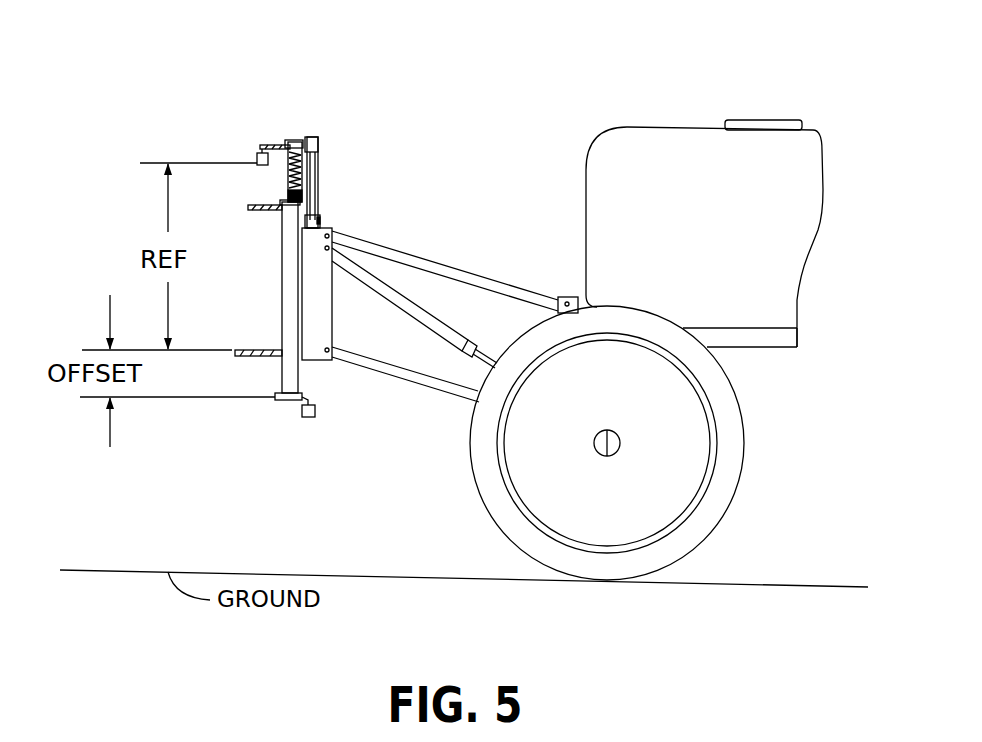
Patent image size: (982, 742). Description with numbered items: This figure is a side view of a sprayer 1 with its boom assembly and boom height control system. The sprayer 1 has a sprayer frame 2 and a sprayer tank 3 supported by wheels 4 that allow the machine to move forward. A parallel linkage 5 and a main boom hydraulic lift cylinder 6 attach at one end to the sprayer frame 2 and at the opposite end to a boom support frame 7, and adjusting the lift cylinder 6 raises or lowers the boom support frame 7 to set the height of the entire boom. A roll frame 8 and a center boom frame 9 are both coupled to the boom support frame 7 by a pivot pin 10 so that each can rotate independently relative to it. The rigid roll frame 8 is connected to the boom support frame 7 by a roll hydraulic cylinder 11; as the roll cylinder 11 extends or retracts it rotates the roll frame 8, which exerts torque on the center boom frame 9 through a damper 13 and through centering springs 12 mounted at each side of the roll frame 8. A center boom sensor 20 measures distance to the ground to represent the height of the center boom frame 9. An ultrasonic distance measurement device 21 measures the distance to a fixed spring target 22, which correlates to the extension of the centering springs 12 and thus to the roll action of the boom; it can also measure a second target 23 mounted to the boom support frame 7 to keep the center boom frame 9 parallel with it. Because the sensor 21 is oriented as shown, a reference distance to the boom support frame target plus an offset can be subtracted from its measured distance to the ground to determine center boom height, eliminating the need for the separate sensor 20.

The sprayer 1 is at (594, 84).
The sprayer frame 2 is at (740, 334).
The sprayer tank 3 is at (777, 120).
The wheels 4 is at (708, 517).
The parallel linkage 5 is at (397, 366).
The main boom hydraulic lift cylinder 6 is at (449, 329).
The boom support frame 7 is at (310, 361).
The roll frame 8 is at (315, 139).
The center boom frame 9 is at (273, 381).
The pivot pin 10 is at (330, 218).
The roll hydraulic cylinder 11 is at (318, 190).
The centering springs 12 is at (289, 160).
The damper 13 is at (293, 133).
The center boom sensor 20 is at (306, 418).
The distance measurement device 21 is at (256, 156).
The fixed spring target 22 is at (262, 210).
The second target 23 is at (260, 349).